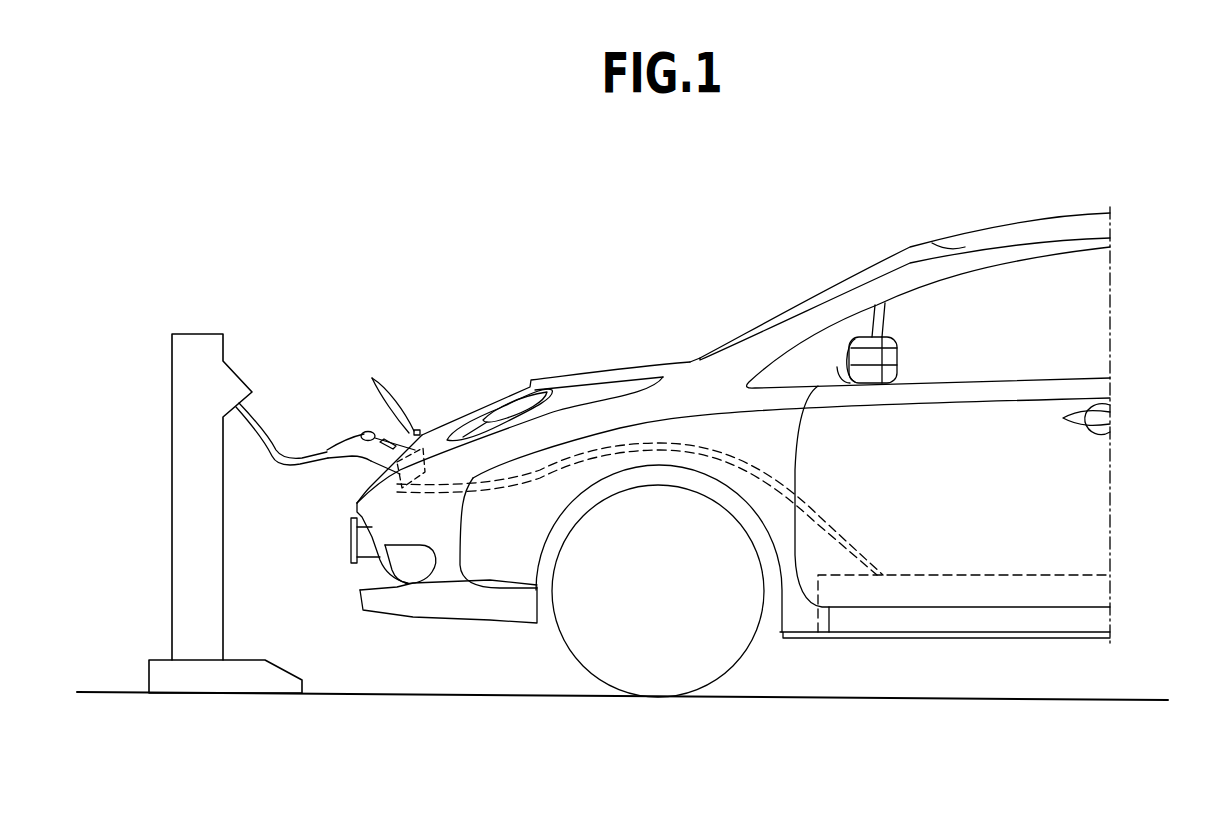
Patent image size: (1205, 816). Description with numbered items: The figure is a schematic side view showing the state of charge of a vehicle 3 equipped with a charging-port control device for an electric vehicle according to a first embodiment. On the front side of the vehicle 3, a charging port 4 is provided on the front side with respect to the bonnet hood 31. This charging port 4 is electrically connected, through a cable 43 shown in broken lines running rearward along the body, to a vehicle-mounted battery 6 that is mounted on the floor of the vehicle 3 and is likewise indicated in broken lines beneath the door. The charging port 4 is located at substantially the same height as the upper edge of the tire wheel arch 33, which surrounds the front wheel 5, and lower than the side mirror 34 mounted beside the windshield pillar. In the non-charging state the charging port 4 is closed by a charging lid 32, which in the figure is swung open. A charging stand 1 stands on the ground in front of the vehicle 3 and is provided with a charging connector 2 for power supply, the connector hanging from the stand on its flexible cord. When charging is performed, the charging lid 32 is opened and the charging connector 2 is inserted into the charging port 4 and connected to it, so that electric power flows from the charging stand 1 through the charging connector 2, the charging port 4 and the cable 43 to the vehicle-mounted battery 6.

The charging stand 1 is at (205, 322).
The charging connector 2 is at (346, 427).
The vehicle 3 is at (980, 210).
The charging port 4 is at (392, 491).
The front wheel 5 is at (572, 655).
The vehicle-mounted battery 6 is at (1027, 575).
The bonnet hood 31 is at (471, 397).
The charging lid 32 is at (394, 397).
The tire wheel arch 33 is at (736, 495).
The side mirror 34 is at (865, 357).
The cable 43 is at (695, 450).